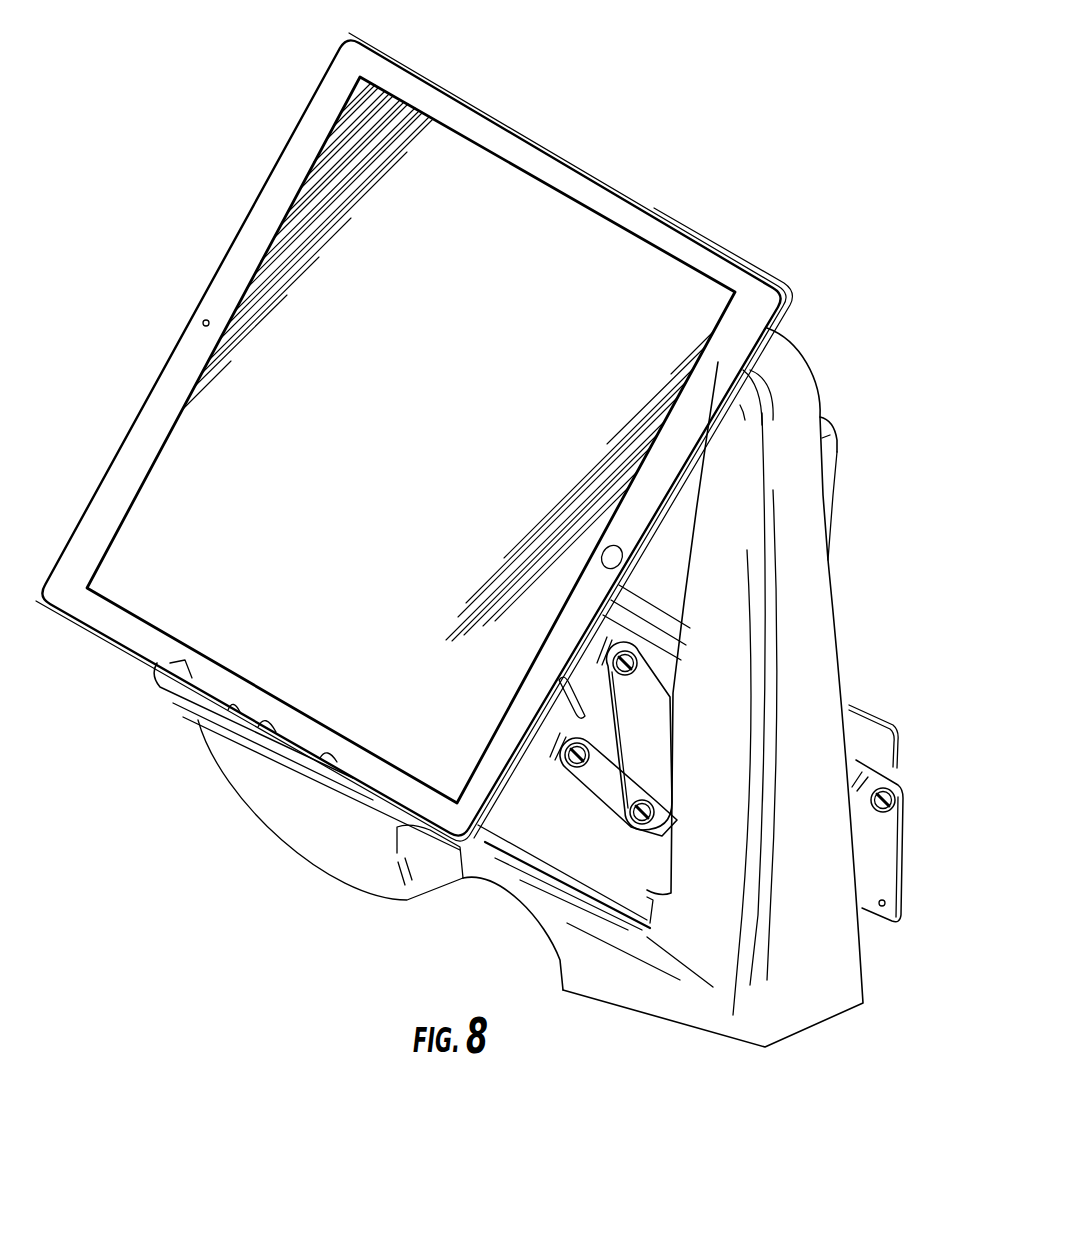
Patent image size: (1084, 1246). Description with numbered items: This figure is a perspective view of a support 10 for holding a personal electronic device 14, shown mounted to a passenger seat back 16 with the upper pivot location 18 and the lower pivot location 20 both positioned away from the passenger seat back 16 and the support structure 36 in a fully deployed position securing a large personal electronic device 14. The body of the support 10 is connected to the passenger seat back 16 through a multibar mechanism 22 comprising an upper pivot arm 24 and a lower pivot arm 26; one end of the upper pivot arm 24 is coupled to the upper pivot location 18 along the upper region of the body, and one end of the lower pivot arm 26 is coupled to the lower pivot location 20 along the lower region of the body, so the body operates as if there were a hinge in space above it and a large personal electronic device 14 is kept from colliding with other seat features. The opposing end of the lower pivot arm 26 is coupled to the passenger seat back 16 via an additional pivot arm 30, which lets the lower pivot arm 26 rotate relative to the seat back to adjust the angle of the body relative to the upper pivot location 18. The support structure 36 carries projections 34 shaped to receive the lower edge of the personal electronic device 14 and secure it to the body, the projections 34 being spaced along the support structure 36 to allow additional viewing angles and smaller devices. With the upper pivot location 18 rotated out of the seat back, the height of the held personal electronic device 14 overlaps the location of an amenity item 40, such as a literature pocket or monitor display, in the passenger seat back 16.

The support 10 is at (914, 250).
The personal electronic device 14 is at (257, 443).
The passenger seat back 16 is at (800, 667).
The upper pivot location 18 is at (620, 615).
The lower pivot location 20 is at (520, 823).
The multibar mechanism 22 is at (653, 720).
The upper pivot arm 24 is at (643, 693).
The lower pivot arm 26 is at (597, 780).
The additional pivot arm 30 is at (644, 815).
The projections 34 is at (327, 753).
The support structure 36 is at (227, 720).
The amenity item 40 is at (675, 530).